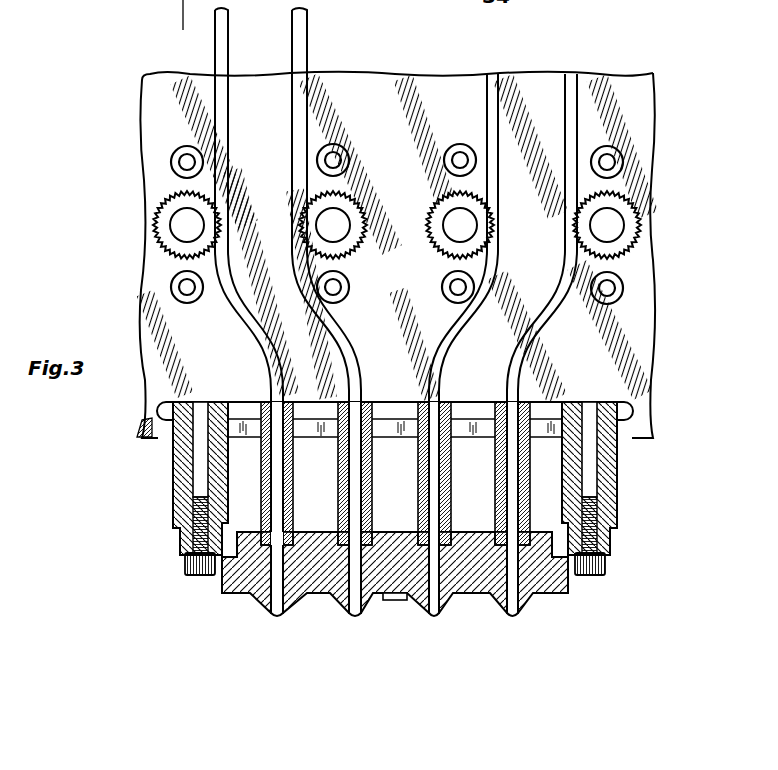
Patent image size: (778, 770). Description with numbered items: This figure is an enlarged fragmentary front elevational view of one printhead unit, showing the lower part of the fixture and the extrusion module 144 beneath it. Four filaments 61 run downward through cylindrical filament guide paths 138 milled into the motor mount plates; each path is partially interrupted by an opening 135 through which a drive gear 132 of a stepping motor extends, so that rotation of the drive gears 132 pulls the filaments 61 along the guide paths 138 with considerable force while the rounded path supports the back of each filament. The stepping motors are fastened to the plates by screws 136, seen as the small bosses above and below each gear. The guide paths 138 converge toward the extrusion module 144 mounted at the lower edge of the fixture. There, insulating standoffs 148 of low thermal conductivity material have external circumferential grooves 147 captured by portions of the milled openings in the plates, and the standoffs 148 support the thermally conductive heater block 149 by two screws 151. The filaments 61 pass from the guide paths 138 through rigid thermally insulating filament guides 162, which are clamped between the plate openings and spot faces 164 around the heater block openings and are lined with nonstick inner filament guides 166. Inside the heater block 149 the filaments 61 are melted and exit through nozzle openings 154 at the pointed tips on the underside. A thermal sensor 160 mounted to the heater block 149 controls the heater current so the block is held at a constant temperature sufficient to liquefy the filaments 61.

The filaments 61 is at (229, 46).
The drive gear 132 is at (341, 258).
The openings 135 is at (157, 232).
The screws 136 is at (171, 165).
The filament guide paths 138 is at (226, 125).
The extrusion module 144 is at (620, 458).
The external circumferential grooves 147 is at (390, 410).
The insulating standoffs 148 is at (172, 494).
The heater block 149 is at (540, 600).
The screws 151 is at (182, 566).
The nozzle openings 154 is at (355, 618).
The thermal sensor 160 is at (393, 602).
The insulating filament guides 162 is at (258, 450).
The spot faces 164 is at (293, 546).
The inner filament guides 166 is at (271, 469).